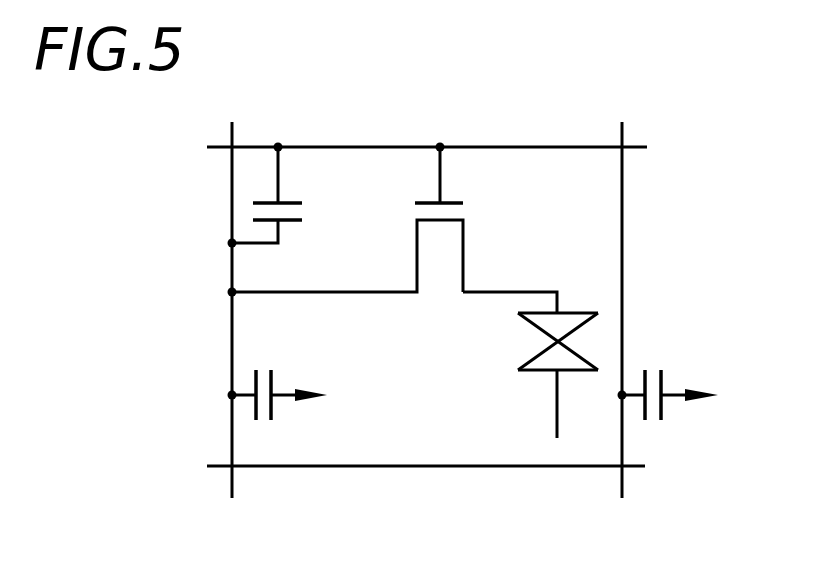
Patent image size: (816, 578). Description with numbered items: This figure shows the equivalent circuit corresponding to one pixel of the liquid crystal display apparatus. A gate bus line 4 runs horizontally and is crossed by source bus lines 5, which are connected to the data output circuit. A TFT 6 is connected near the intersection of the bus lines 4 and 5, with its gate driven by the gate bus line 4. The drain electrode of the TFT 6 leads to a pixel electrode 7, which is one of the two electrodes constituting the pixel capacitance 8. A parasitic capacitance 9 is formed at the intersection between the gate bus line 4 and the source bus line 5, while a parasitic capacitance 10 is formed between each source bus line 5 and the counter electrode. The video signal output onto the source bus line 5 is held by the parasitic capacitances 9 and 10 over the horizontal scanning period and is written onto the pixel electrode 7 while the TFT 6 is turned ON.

The gate bus line 4 is at (632, 147).
The source bus line 5 is at (232, 492).
The TFT 6 is at (452, 203).
The pixel electrode 7 is at (532, 276).
The pixel capacitance 8 is at (514, 343).
The parasitic capacitance 9 is at (300, 222).
The parasitic capacitance 10 is at (272, 410).